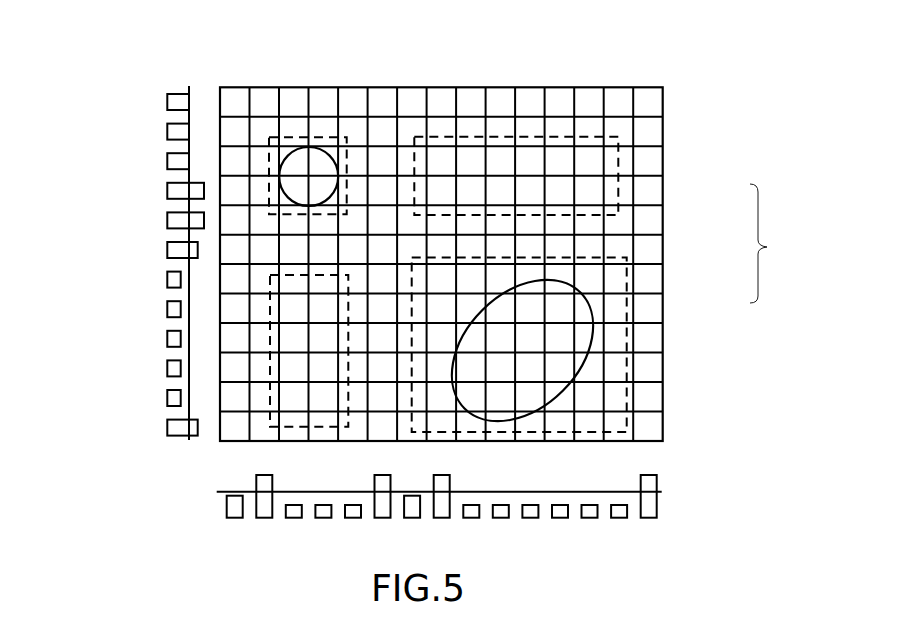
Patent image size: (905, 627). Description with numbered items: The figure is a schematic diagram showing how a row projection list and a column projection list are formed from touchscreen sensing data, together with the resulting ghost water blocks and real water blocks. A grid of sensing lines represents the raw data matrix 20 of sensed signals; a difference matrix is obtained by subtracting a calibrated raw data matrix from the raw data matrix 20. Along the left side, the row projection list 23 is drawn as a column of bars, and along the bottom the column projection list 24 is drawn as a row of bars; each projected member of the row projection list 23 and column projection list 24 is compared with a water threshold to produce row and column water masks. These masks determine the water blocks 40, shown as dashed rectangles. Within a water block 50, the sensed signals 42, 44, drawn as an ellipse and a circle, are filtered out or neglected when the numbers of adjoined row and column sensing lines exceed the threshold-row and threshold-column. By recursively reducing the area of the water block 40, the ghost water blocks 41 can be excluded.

The raw data matrix 20 is at (583, 86).
The row projection list 23 is at (134, 266).
The column projection list 24 is at (265, 540).
The water blocks 40 is at (776, 243).
The ghost water blocks 41 is at (310, 316).
The sensed signal 42 is at (565, 302).
The sensed signal 44 is at (306, 158).
The water block 50 is at (318, 134).